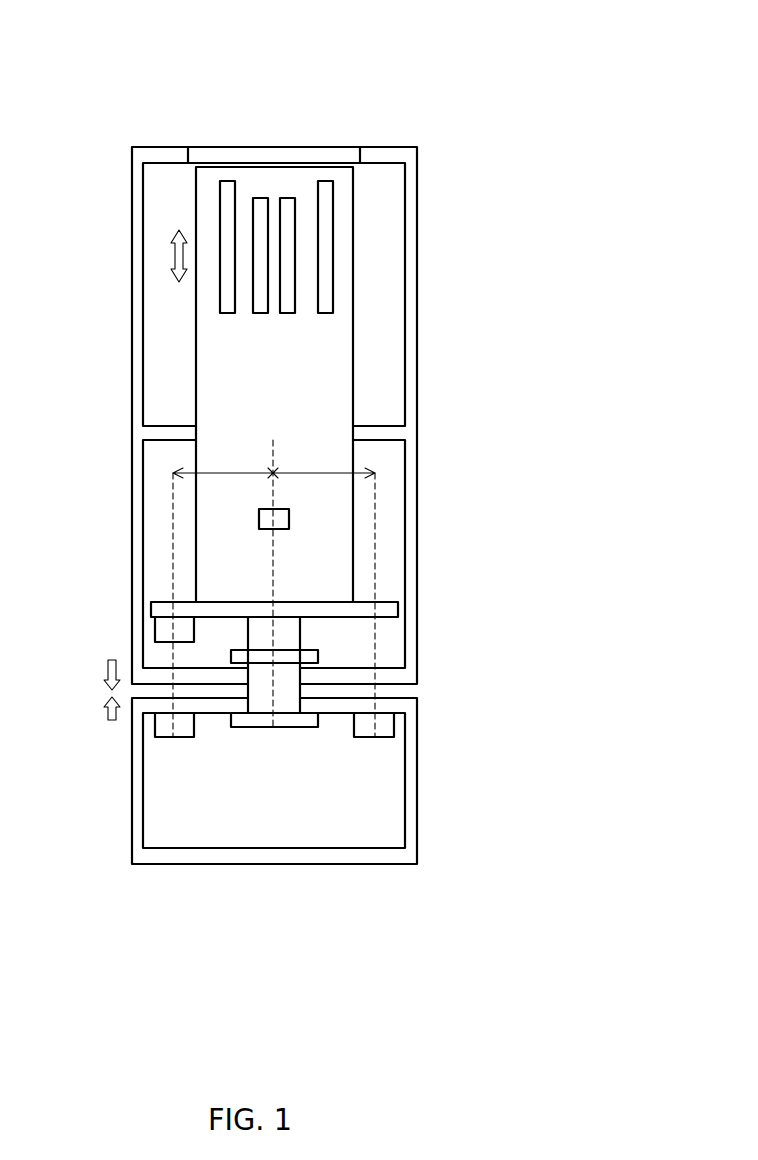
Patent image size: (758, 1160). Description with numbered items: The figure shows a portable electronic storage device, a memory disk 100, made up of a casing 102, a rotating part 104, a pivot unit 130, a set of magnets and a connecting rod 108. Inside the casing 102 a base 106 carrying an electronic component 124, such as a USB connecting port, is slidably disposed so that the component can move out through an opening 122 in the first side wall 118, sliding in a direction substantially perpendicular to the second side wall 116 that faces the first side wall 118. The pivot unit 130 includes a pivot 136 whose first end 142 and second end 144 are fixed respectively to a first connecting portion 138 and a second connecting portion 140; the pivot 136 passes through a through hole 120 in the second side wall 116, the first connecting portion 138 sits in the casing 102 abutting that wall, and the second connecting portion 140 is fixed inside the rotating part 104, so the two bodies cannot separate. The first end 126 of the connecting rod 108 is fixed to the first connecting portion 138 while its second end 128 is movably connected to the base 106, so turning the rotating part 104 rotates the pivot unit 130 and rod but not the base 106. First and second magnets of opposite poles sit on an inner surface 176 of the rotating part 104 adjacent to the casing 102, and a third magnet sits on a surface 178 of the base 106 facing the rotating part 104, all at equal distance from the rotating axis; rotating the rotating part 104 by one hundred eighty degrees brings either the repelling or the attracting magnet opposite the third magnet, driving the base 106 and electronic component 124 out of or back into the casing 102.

The memory disk 100 is at (117, 70).
The casing 102 is at (413, 203).
The rotating part 104 is at (412, 759).
The base 106 is at (398, 608).
The connecting rod 108 is at (281, 635).
The second side wall 116 is at (303, 676).
The first side wall 118 is at (398, 155).
The through hole 120 is at (353, 677).
The opening 122 is at (318, 157).
The electronic component 124 is at (343, 343).
The first end of the connecting rod 126 is at (299, 726).
The second end of the connecting rod 128 is at (271, 611).
The pivot unit 130 is at (244, 814).
The pivot 136 is at (250, 716).
The first connecting portion 138 is at (240, 658).
The second connecting portion 140 is at (267, 665).
The first end of the pivot 142 is at (296, 657).
The second end of the pivot 144 is at (340, 716).
The inner surface 176 is at (353, 717).
The surface of the base 178 is at (215, 622).